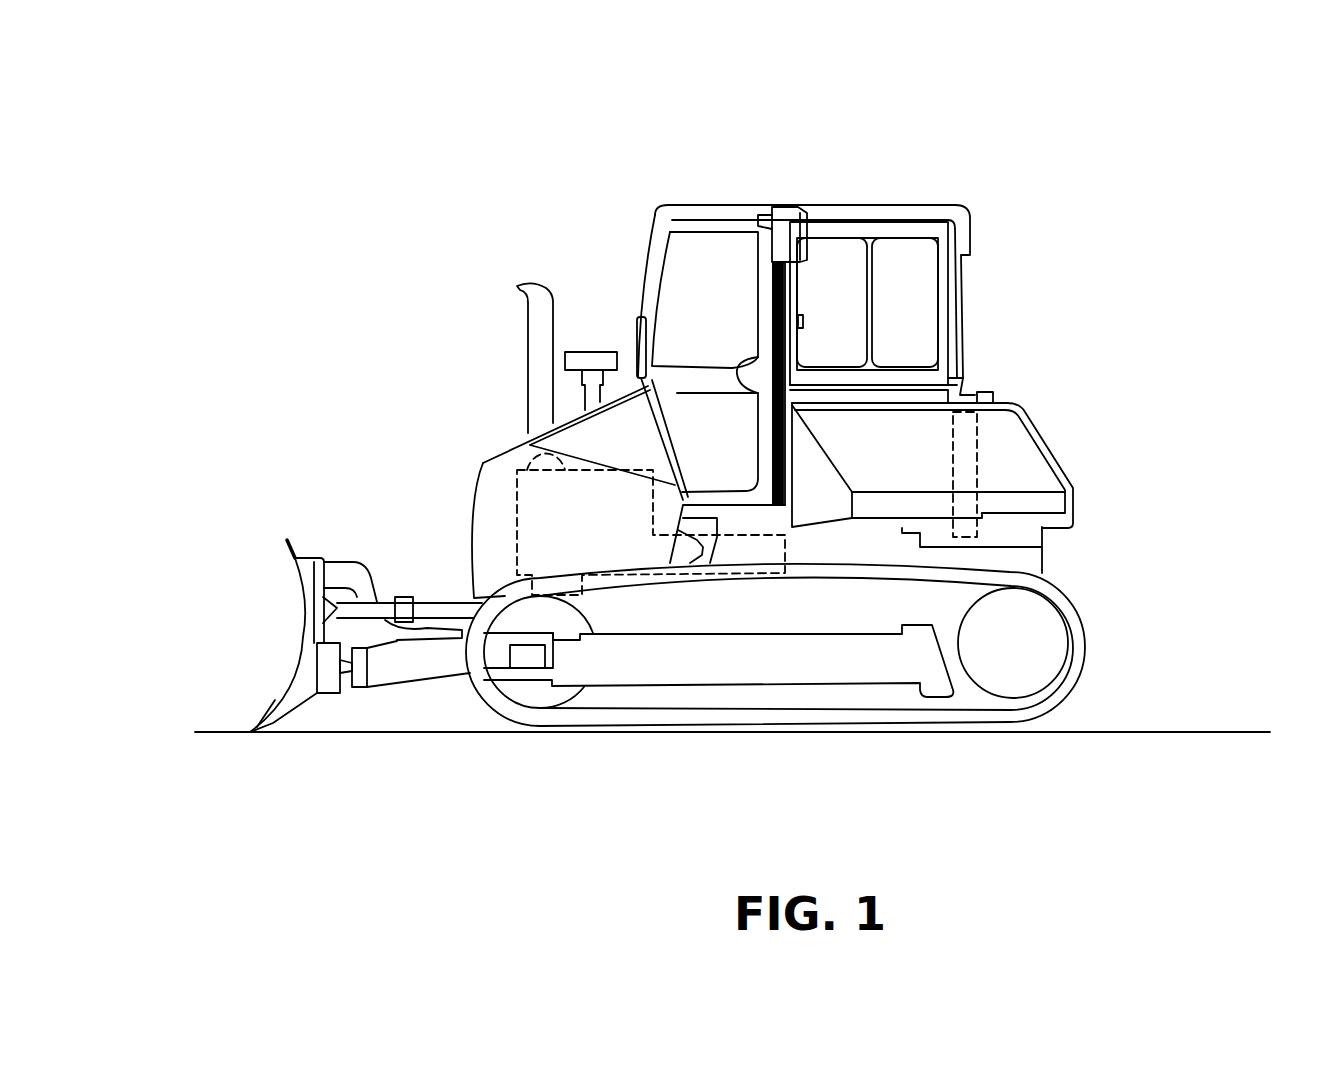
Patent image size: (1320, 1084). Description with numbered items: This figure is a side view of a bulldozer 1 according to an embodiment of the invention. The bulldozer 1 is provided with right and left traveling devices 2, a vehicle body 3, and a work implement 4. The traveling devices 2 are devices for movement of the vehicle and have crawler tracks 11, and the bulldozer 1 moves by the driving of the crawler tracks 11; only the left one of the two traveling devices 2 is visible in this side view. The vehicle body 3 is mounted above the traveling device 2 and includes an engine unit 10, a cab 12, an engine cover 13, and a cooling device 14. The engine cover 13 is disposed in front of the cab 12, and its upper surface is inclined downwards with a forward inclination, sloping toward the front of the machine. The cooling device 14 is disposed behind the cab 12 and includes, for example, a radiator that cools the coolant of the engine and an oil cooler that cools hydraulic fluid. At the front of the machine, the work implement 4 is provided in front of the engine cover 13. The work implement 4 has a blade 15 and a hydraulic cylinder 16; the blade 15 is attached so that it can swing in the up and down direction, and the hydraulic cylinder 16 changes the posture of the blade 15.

The bulldozer 1 is at (322, 182).
The traveling device 2 is at (1137, 622).
The vehicle body 3 is at (1036, 279).
The work implement 4 is at (254, 482).
The engine unit 10 is at (515, 497).
The crawler track 11 is at (1073, 603).
The cab 12 is at (757, 228).
The engine cover 13 is at (498, 462).
The cooling device 14 is at (983, 460).
The blade 15 is at (290, 703).
The hydraulic cylinder 16 is at (433, 608).